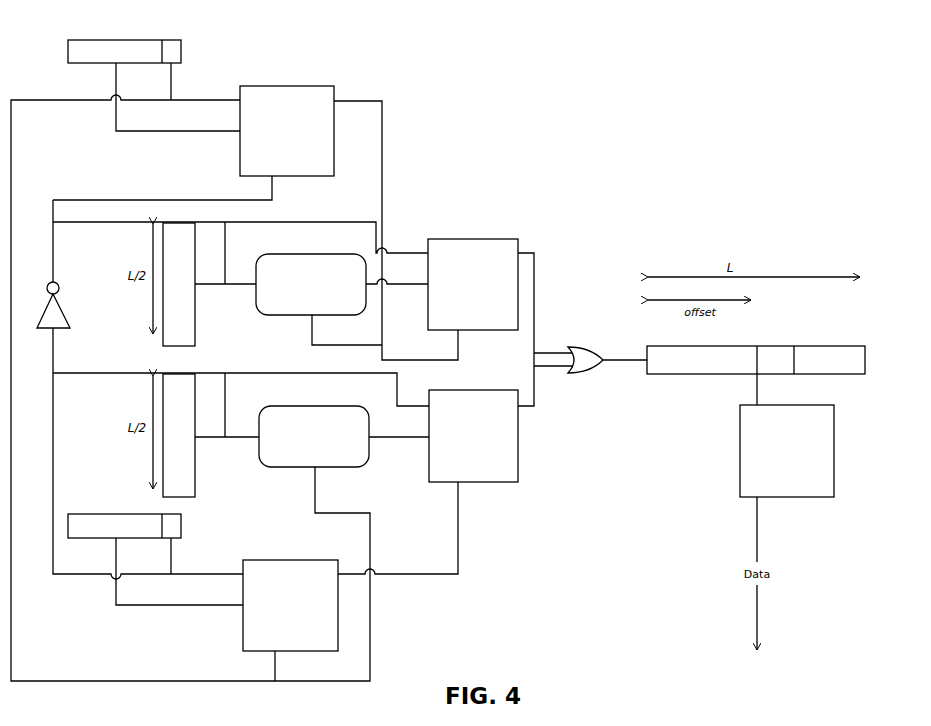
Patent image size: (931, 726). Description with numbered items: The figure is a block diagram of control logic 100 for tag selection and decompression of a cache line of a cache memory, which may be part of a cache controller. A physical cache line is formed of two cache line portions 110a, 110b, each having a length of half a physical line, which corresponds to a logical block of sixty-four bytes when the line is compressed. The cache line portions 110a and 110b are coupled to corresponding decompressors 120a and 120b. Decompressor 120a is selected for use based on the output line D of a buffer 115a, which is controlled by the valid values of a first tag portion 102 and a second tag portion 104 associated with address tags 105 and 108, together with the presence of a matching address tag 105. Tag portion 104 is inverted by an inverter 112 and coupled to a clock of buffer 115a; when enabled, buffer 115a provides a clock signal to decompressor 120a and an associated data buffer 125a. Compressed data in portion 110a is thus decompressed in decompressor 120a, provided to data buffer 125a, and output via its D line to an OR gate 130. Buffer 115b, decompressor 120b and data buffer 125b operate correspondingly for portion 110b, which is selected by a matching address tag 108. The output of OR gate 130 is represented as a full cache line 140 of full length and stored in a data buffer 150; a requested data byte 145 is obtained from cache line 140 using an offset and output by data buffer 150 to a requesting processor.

The control logic 100 is at (626, 88).
The first tag portion 102 is at (172, 40).
The second tag portion 104 is at (181, 527).
The address tag 105 is at (116, 40).
The address tag 108 is at (122, 514).
The cache line portion 110a is at (163, 318).
The cache line portion 110b is at (163, 447).
The inverter 112 is at (60, 310).
The buffer 115a is at (286, 86).
The buffer 115b is at (282, 565).
The decompressor 120a is at (290, 259).
The decompressor 120b is at (310, 410).
The data buffer 125a is at (482, 239).
The data buffer 125b is at (460, 391).
The OR gate 130 is at (583, 346).
The cache line 140 is at (707, 370).
The data byte 145 is at (776, 347).
The data buffer 150 is at (833, 445).